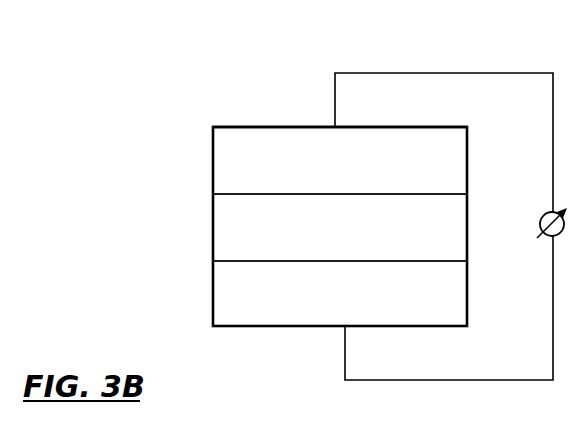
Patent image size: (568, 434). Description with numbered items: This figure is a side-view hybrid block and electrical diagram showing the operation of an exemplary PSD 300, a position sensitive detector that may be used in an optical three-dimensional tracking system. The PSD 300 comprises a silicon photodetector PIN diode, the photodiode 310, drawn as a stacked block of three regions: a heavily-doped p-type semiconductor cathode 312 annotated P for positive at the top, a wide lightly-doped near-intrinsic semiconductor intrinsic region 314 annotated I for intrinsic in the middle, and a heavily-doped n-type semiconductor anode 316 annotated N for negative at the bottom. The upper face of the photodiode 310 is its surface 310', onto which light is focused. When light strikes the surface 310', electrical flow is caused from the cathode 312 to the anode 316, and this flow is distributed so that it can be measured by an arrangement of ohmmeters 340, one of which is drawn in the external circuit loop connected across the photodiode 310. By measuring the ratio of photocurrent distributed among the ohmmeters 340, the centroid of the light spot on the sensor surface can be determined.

The PSD 300 is at (90, 297).
The photodiode 310 is at (318, 180).
The surface 310' is at (340, 76).
The cathode 312 is at (262, 155).
The intrinsic region 314 is at (258, 225).
The anode 316 is at (258, 290).
The ohmmeters 340 is at (539, 196).